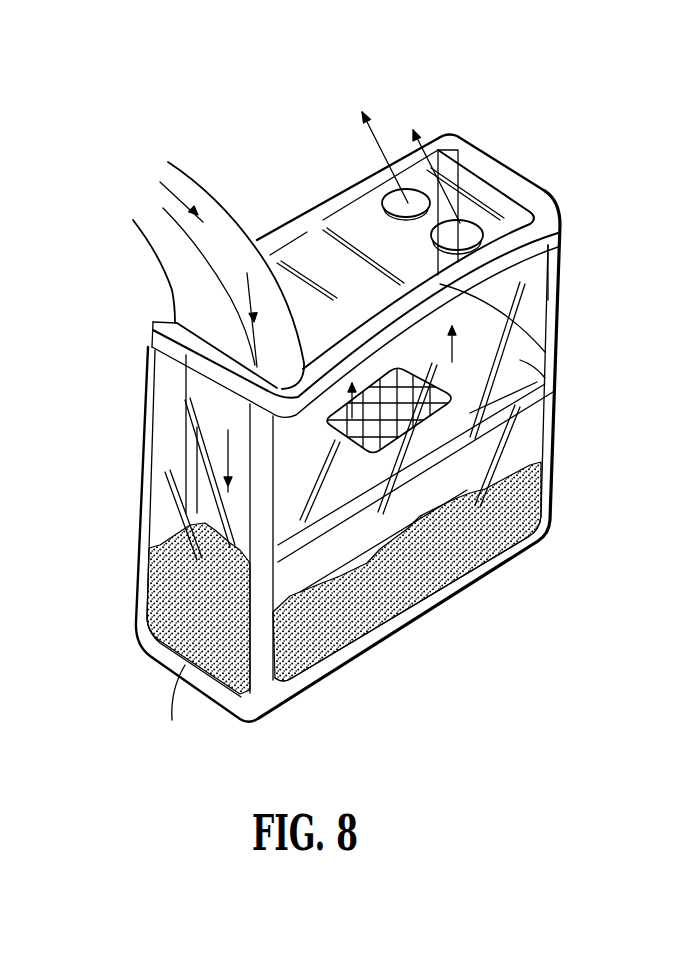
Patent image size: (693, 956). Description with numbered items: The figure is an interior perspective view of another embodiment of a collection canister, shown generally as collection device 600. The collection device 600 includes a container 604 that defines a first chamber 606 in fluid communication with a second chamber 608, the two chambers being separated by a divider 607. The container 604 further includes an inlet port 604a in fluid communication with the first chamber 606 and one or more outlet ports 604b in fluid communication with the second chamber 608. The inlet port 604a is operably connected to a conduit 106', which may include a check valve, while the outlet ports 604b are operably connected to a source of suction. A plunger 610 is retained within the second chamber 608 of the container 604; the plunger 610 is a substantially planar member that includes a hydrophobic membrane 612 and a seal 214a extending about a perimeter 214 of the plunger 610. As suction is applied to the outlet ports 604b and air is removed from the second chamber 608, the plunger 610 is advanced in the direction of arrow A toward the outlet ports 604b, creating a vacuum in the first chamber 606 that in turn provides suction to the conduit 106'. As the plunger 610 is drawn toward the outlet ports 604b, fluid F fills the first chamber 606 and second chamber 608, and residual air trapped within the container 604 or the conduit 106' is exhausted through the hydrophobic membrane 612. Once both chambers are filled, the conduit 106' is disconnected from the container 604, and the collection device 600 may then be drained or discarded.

The collection device 600 is at (477, 89).
The conduit 106' is at (218, 251).
The container 604 is at (559, 299).
The inlet port 604a is at (152, 322).
The outlet ports 604b is at (460, 222).
The first chamber 606 is at (160, 513).
The divider 607 is at (317, 667).
The second chamber 608 is at (523, 273).
The plunger 610 is at (525, 363).
The hydrophobic membrane 612 is at (455, 392).
The perimeter 214 is at (525, 453).
The seal 214a is at (528, 427).